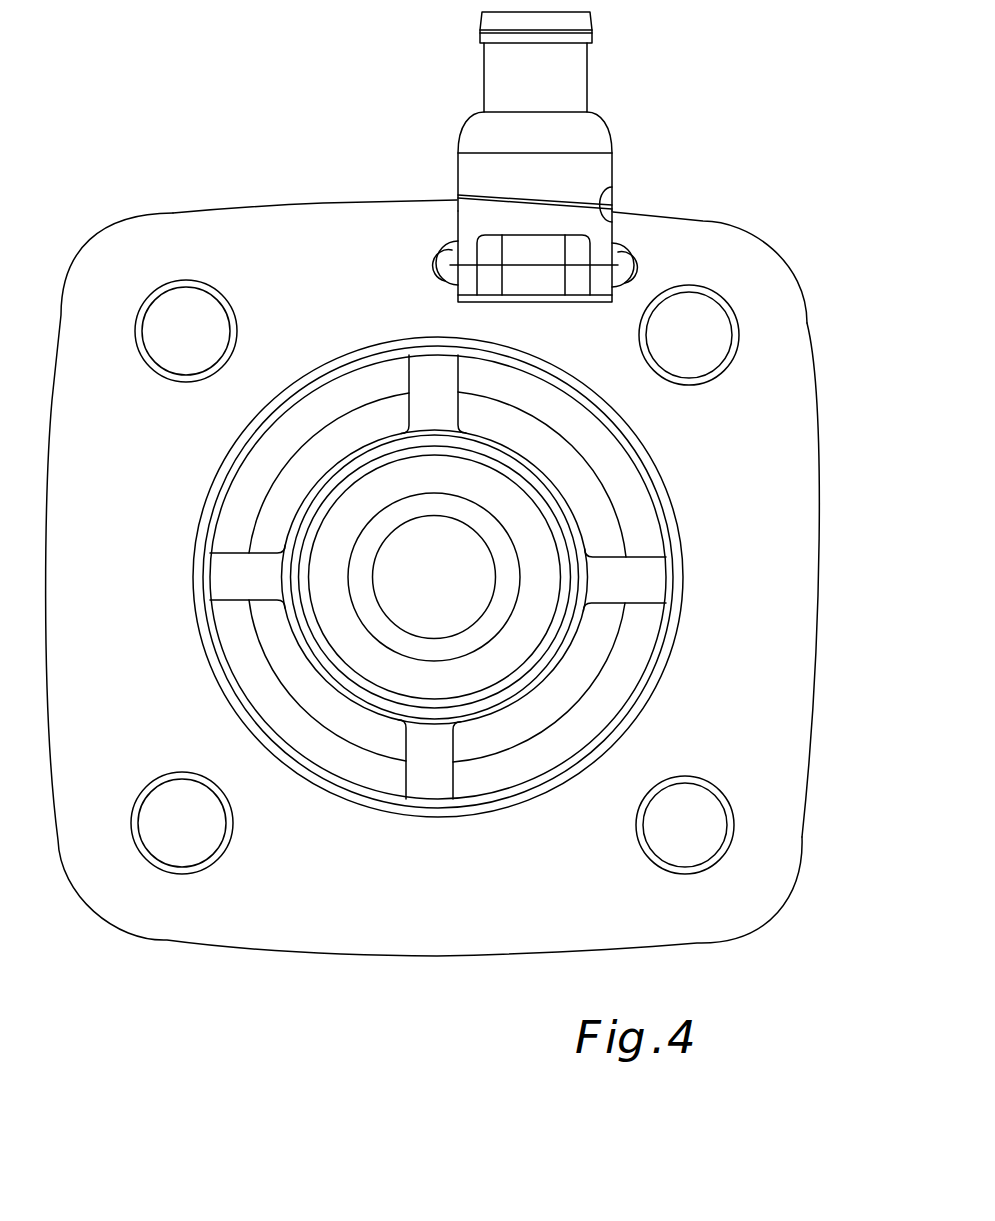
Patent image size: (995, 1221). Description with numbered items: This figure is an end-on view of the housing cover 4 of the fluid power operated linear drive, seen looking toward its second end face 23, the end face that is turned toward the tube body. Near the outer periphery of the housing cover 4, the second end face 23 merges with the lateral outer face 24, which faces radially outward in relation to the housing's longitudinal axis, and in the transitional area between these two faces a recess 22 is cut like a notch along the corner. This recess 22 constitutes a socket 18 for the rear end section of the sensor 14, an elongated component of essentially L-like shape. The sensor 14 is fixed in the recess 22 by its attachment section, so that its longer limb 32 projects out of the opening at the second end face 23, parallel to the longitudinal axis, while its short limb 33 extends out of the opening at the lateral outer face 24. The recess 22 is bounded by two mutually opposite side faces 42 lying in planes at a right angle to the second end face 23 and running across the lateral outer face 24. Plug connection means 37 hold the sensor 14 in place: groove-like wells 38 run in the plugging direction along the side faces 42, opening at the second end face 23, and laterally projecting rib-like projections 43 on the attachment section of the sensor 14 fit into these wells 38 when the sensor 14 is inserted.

The housing cover 4 is at (192, 233).
The lateral outer face 24 is at (379, 192).
The second end face 23 is at (778, 449).
The short limb 33 is at (495, 77).
The sensor 14 is at (587, 128).
The socket 18 is at (652, 155).
The recess 22 is at (612, 183).
The side faces 42 is at (595, 232).
The projections 43 is at (462, 255).
The plug connection means 37 is at (430, 259).
The wells 38 is at (447, 278).
The longer limb 32 is at (540, 282).